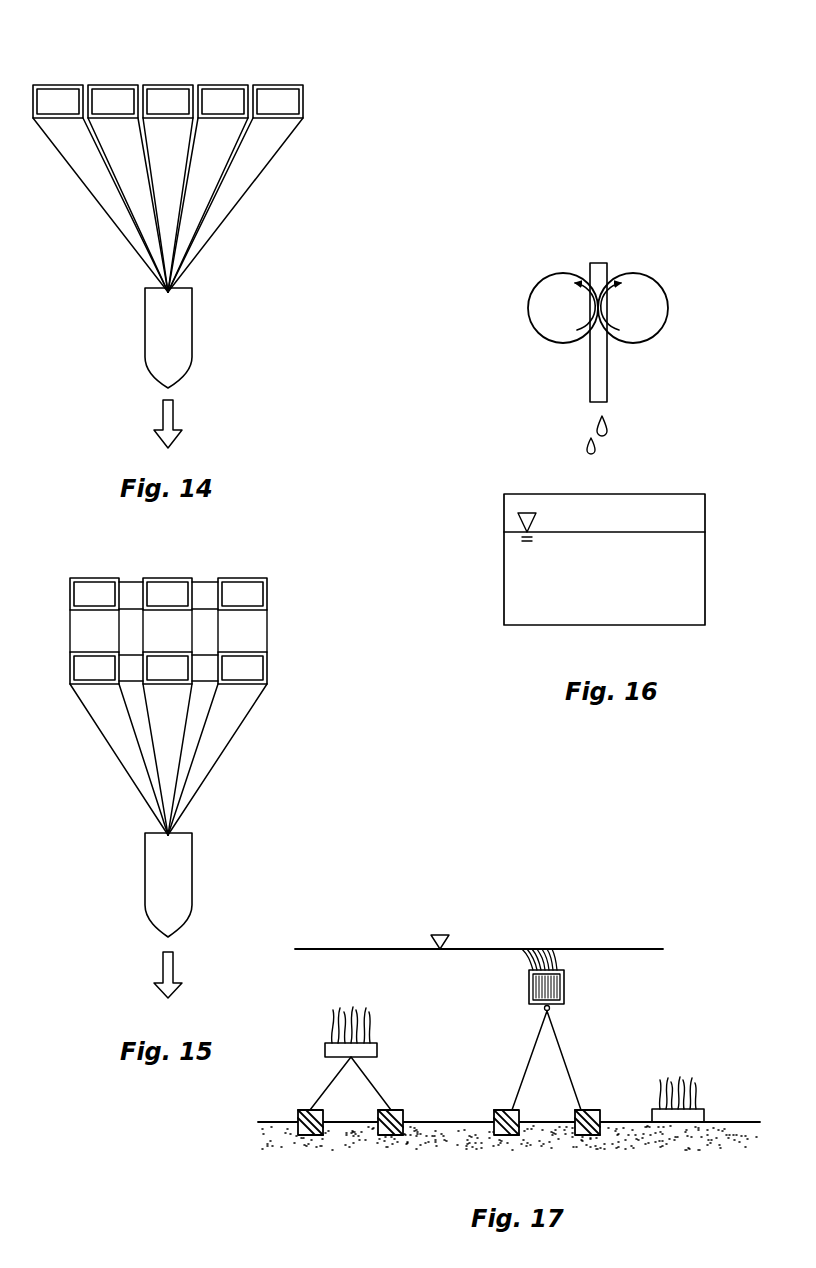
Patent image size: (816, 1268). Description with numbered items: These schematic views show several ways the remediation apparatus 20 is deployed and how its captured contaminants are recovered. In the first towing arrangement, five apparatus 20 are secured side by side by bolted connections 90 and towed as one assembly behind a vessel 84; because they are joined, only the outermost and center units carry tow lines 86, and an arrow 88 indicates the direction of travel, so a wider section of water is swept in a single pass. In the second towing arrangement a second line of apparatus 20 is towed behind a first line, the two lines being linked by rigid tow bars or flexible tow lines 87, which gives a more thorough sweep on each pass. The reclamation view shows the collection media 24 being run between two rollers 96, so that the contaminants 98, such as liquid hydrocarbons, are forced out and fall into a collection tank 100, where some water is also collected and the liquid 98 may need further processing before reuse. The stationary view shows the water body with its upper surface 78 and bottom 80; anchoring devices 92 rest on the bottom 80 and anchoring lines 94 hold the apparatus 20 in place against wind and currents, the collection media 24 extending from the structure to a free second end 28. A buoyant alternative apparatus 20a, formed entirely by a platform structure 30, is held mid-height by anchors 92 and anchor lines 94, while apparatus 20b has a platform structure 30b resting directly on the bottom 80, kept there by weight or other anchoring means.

In FIG. 17, the remediation apparatus 20 is at (565, 988).
In FIG. 17, the alternative apparatus 20a is at (330, 1033).
In FIG. 17, the bottom-positioned apparatus 20b is at (702, 1100).
In FIG. 16, the collection media 24 is at (590, 366).
In FIG. 17, the collection media 24 is at (376, 1013).
In FIG. 17, the second end 28 is at (540, 949).
In FIG. 17, the platform structure 30 is at (378, 1046).
In FIG. 17, the bottom platform structure 30b is at (670, 1118).
In FIG. 17, the upper surface 78 is at (472, 948).
In FIG. 17, the bottom 80 is at (436, 1119).
In FIG. 14, the vessel 84 is at (150, 321).
In FIG. 15, the vessel 84 is at (148, 867).
In FIG. 14, the tow lines 86 is at (160, 228).
In FIG. 15, the tow lines 86 is at (150, 760).
In FIG. 15, the tow bars or tow lines 87 is at (137, 645).
In FIG. 14, the arrow 88 is at (162, 421).
In FIG. 15, the arrow 88 is at (162, 969).
In FIG. 14, the bolted connections 90 is at (134, 116).
In FIG. 15, the bolted connections 90 is at (214, 600).
In FIG. 17, the anchoring devices 92 is at (378, 1118).
In FIG. 17, the anchoring lines 94 is at (366, 1081).
In FIG. 16, the rollers 96 is at (540, 298).
In FIG. 16, the contaminants 98 is at (607, 426).
In FIG. 16, the collection tank 100 is at (504, 505).